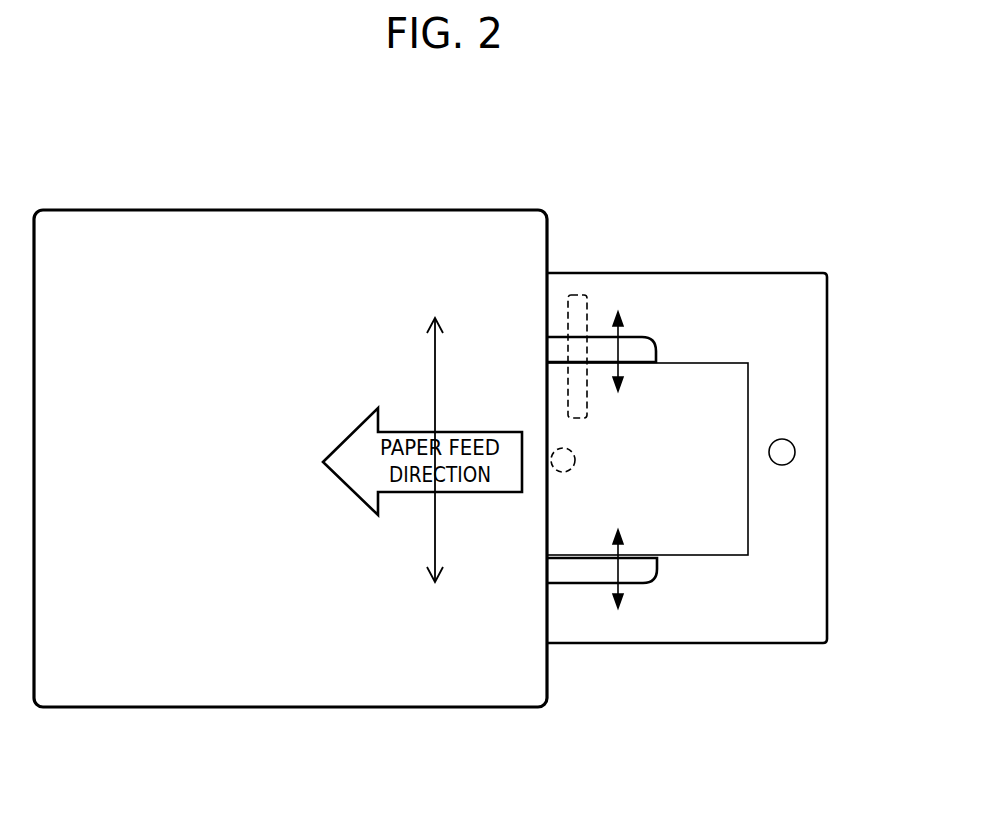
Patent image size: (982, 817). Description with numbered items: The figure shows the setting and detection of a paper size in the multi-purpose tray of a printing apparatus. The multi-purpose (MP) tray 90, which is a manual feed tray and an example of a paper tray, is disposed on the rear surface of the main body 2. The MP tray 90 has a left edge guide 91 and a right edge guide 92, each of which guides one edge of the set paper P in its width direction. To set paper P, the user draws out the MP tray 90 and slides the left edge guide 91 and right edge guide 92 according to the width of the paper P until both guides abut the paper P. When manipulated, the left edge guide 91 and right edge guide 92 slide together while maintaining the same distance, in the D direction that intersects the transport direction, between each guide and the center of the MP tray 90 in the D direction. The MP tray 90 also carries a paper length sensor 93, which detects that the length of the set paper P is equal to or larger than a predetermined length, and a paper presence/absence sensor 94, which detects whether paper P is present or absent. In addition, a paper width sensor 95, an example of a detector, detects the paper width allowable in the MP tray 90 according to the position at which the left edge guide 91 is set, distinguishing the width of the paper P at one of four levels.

The main body 2 is at (270, 210).
The multi-purpose (MP) tray 90 is at (650, 273).
The left edge guide 91 is at (657, 351).
The right edge guide 92 is at (658, 575).
The paper length sensor 93 is at (795, 452).
The paper presence/absence sensor 94 is at (575, 462).
The paper width sensor 95 is at (583, 292).
The paper P is at (748, 392).
The D direction D is at (444, 450).